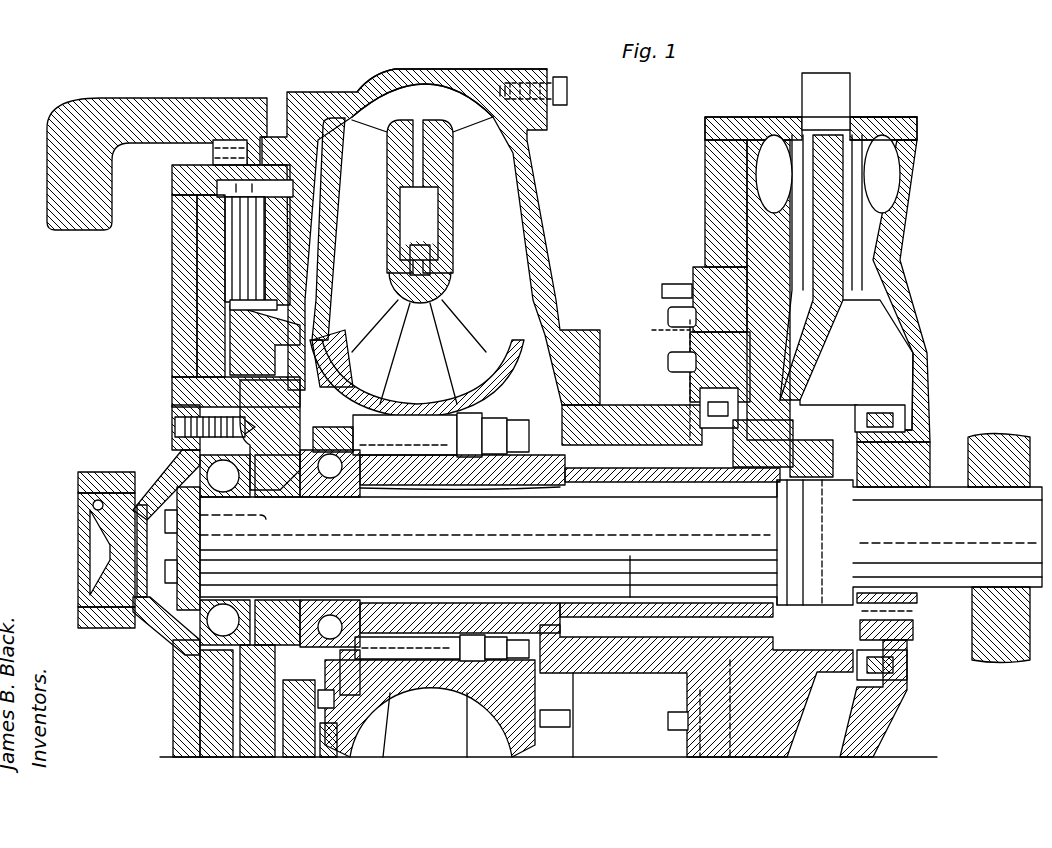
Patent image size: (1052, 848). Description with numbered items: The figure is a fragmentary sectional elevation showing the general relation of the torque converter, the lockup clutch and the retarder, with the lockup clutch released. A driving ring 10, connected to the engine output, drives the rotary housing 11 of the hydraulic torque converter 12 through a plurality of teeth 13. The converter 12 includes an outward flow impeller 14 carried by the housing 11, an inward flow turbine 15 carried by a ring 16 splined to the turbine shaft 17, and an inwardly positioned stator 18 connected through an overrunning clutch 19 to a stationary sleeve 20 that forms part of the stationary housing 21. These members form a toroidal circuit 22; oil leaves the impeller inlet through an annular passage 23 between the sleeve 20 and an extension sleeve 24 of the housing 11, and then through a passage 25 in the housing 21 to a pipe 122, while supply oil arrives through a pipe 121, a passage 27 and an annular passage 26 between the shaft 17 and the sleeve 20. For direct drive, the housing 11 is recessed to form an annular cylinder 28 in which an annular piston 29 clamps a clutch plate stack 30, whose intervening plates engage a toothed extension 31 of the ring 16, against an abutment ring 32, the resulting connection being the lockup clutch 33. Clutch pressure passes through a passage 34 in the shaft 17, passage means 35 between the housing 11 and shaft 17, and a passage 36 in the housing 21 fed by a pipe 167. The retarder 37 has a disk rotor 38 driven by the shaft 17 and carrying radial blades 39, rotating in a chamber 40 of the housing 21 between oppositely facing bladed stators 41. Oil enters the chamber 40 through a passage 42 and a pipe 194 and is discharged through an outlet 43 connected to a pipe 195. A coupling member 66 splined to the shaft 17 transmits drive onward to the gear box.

The driving ring 10 is at (45, 168).
The rotary housing 11 is at (300, 93).
The hydraulic torque converter 12 is at (372, 62).
The teeth 13 is at (210, 157).
The outward flow impeller 14 is at (493, 216).
The inward flow turbine 15 is at (360, 216).
The ring 16 is at (283, 400).
The turbine shaft 17 is at (450, 527).
The stator 18 is at (422, 359).
The overrunning clutch 19 is at (410, 441).
The stationary sleeve 20 is at (505, 478).
The stationary housing 21 is at (705, 188).
The toroidal circuit 22 is at (442, 88).
The annular passage 23 is at (665, 474).
The extension sleeve 24 is at (602, 410).
The passage 25 is at (690, 380).
The annular passage 26 is at (630, 565).
The passage 27 is at (790, 705).
The annular cylinder 28 is at (193, 348).
The annular piston 29 is at (200, 363).
The clutch plate stack 30 is at (213, 258).
The toothed extension 31 is at (277, 340).
The abutment ring 32 is at (313, 258).
The lockup clutch 33 is at (207, 228).
The passage 34 is at (678, 529).
The passage means 35 is at (172, 600).
The passage 36 is at (790, 362).
The retarder 37 is at (742, 100).
The disk rotor 38 is at (863, 350).
The radial blades 39 is at (820, 290).
The chamber 40 is at (856, 365).
The bladed stators 41 is at (705, 160).
The passage 42 is at (656, 380).
The outlet 43 is at (855, 118).
The coupling member 66 is at (987, 662).
The pipe 121 is at (677, 731).
The pipe 122 is at (668, 357).
The pipe 167 is at (665, 283).
The pipe 194 is at (668, 310).
The pipe 195 is at (843, 82).